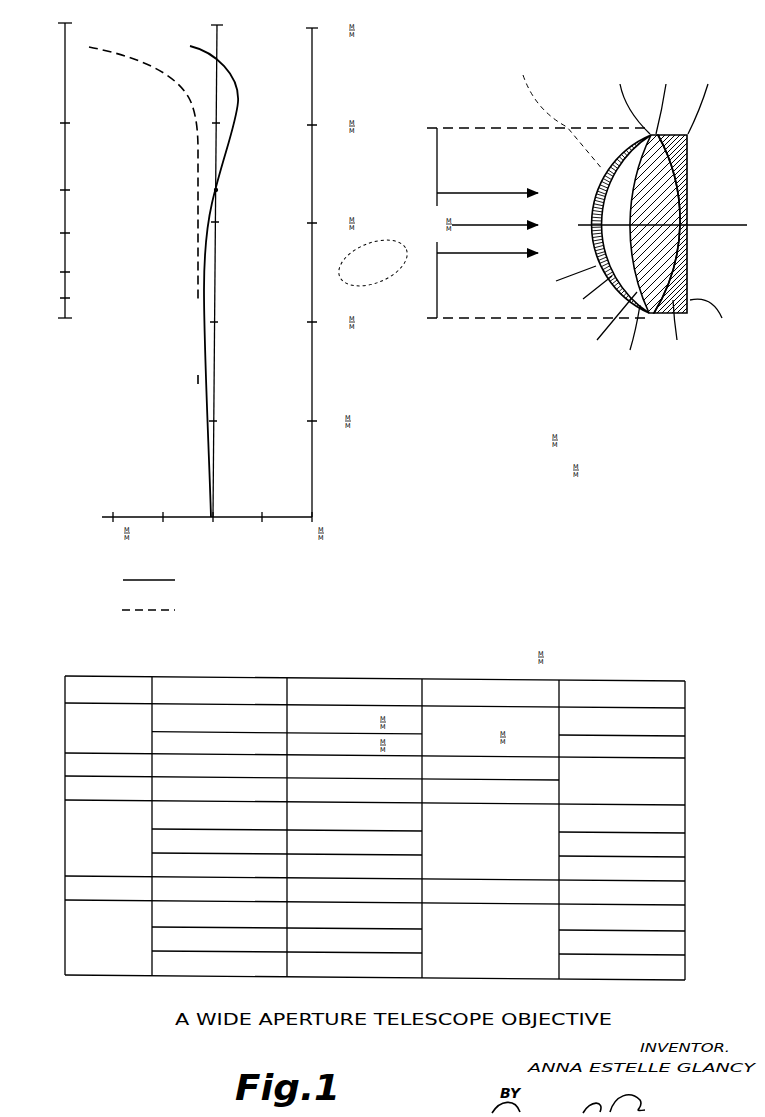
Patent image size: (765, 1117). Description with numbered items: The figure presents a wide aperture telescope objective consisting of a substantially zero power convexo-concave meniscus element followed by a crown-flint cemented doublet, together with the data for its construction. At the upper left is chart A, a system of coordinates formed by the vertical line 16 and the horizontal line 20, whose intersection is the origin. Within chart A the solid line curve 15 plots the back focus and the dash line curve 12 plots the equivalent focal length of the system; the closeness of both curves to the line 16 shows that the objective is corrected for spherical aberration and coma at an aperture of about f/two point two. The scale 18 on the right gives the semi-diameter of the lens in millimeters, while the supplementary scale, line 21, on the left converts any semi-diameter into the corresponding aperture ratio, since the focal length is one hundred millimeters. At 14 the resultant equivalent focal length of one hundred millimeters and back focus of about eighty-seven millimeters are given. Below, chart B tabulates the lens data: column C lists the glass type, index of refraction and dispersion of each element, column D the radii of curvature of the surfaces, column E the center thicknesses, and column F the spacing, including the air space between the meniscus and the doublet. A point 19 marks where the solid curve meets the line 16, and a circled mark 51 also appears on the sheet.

The dash line curve 12 is at (196, 148).
The lens system data 14 is at (478, 428).
The solid line curve 15 is at (227, 148).
The coordinate line 16 is at (217, 38).
The scale 18 is at (312, 386).
The crossing point of back focus curve 19 is at (216, 190).
The coordinate line 20 is at (108, 516).
The supplementary scale 21 is at (65, 220).
The annotation 51 is at (373, 263).
The chart A is at (113, 543).
The chart B is at (62, 782).
The column C is at (172, 977).
The column D is at (312, 978).
The column E is at (517, 981).
The column F is at (678, 791).